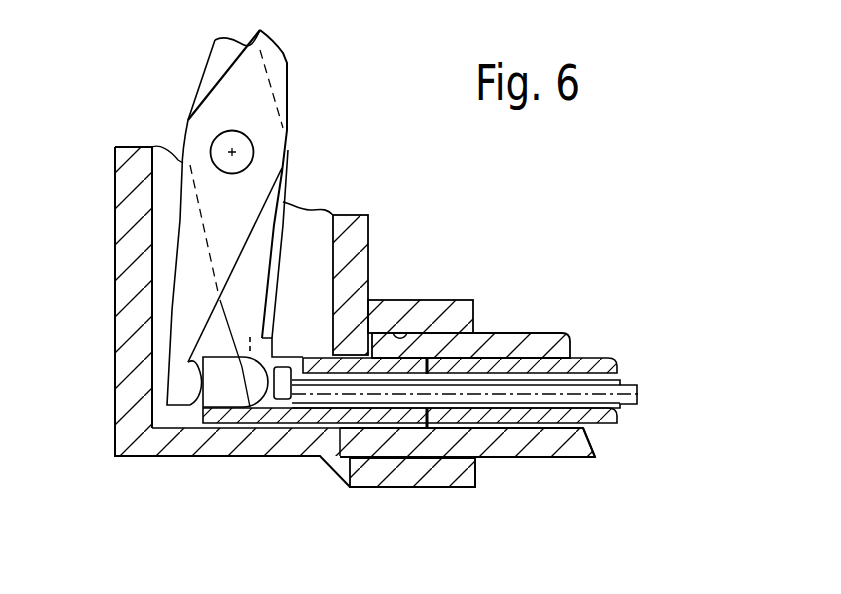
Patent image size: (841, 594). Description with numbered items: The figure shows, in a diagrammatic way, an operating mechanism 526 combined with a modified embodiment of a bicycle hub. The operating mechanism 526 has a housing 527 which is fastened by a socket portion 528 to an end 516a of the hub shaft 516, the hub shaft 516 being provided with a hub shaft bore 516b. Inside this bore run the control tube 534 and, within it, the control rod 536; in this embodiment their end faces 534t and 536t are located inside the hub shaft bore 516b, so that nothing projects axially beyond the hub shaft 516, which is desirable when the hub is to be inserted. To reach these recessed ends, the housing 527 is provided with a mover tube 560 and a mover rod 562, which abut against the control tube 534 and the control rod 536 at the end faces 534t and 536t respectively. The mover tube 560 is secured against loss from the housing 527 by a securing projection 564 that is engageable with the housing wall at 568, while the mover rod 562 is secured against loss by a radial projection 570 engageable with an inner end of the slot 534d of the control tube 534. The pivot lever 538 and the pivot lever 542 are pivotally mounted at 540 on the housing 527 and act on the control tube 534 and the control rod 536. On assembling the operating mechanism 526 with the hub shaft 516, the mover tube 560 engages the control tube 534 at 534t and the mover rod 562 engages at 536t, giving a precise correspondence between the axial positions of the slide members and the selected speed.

The operating mechanism 526 is at (110, 460).
The housing 527 is at (207, 443).
The socket portion 528 is at (460, 307).
The hub shaft 516 is at (543, 340).
The end of hub shaft 516a is at (473, 440).
The hub shaft bore 516b is at (587, 457).
The control tube 534 is at (600, 365).
The slot 534d is at (268, 353).
The end face of control tube 534t is at (440, 440).
The control rod 536 is at (637, 394).
The end face of control rod 536t is at (420, 395).
The pivot lever 538 is at (190, 302).
The pivot 540 is at (246, 138).
The pivot lever 542 is at (275, 202).
The mover tube 560 is at (365, 423).
The mover rod 562 is at (370, 305).
The securing projection 564 is at (268, 338).
The housing wall 568 is at (362, 280).
The radial projection 570 is at (287, 428).